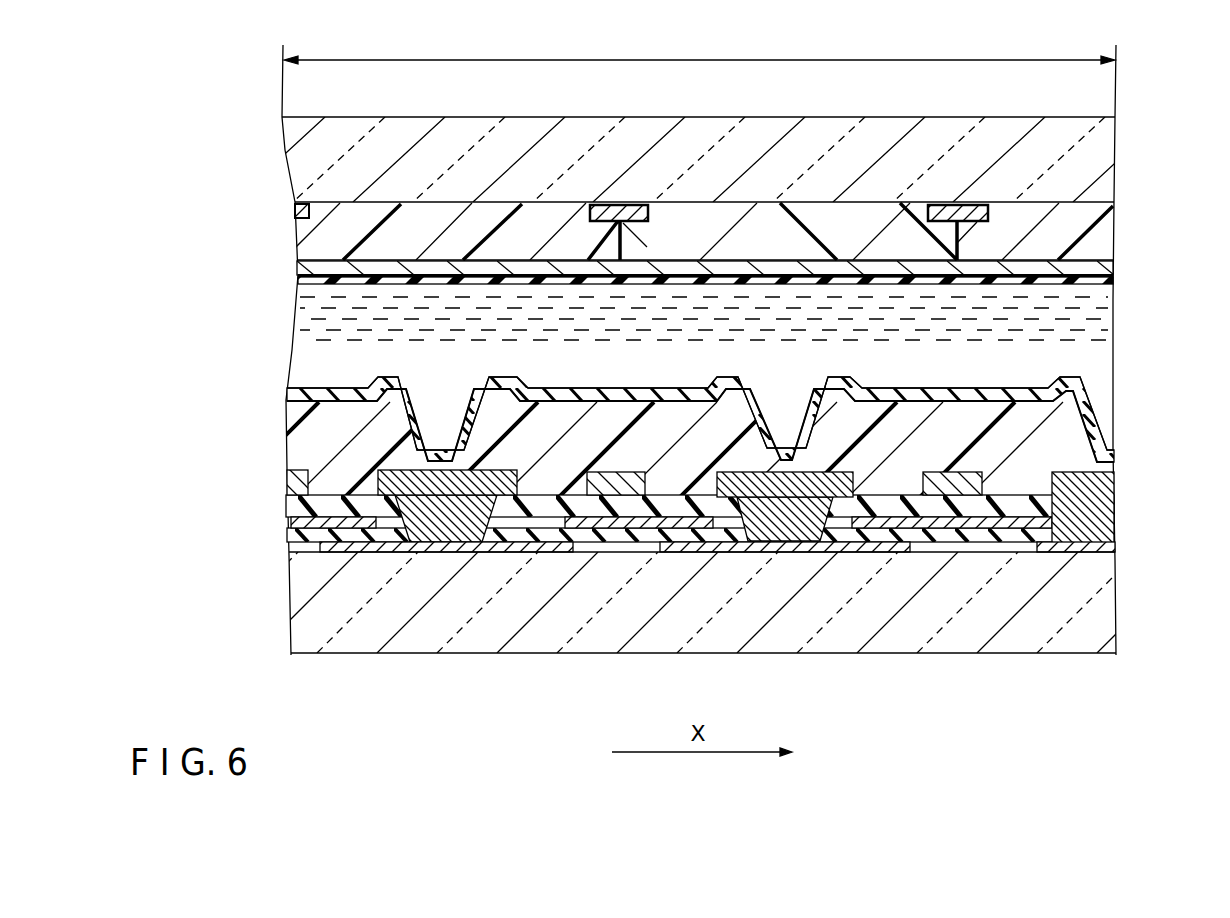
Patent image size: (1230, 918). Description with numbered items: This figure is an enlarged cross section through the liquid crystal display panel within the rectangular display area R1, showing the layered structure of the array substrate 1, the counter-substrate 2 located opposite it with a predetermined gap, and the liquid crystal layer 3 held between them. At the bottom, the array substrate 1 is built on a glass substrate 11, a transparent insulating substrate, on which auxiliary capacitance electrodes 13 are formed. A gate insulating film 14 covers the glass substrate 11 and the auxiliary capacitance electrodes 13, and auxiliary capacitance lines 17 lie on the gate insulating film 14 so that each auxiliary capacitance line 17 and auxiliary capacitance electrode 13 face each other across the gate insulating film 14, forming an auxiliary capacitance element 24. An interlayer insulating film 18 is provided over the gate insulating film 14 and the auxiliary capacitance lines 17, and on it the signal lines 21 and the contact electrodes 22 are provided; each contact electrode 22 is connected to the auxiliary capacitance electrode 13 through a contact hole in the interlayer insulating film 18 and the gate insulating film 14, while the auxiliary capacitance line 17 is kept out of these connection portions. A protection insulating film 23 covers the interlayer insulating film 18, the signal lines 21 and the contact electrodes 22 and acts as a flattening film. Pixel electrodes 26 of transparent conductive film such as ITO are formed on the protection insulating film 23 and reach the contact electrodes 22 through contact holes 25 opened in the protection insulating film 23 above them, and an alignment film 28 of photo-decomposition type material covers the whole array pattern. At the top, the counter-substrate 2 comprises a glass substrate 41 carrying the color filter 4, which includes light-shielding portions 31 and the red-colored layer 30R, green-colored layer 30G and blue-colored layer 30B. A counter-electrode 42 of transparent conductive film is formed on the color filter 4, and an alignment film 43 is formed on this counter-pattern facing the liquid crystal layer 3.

The array substrate 1 is at (697, 421).
The counter-substrate 2 is at (1132, 162).
The liquid crystal layer 3 is at (1100, 360).
The color filter 4 is at (689, 187).
The glass substrate 11 is at (1100, 599).
The auxiliary capacitance electrode 13 is at (398, 550).
The gate insulating film 14 is at (590, 550).
The auxiliary capacitance line 17 is at (353, 548).
The interlayer insulating film 18 is at (640, 510).
The signal line 21 is at (297, 548).
The contact electrode 22 is at (448, 550).
The protection insulating film 23 is at (563, 440).
The auxiliary capacitance element 24 is at (702, 617).
The contact hole 25 is at (422, 388).
The pixel electrode 26 is at (508, 378).
The alignment film 28 is at (682, 388).
The red-colored layer 30R is at (392, 212).
The green-colored layer 30G is at (718, 220).
The blue-colored layer 30B is at (1018, 235).
The light-shielding portion 31 is at (622, 205).
The glass substrate 41 is at (744, 166).
The counter-electrode 42 is at (312, 266).
The alignment film 43 is at (312, 283).
The display area R1 is at (699, 47).